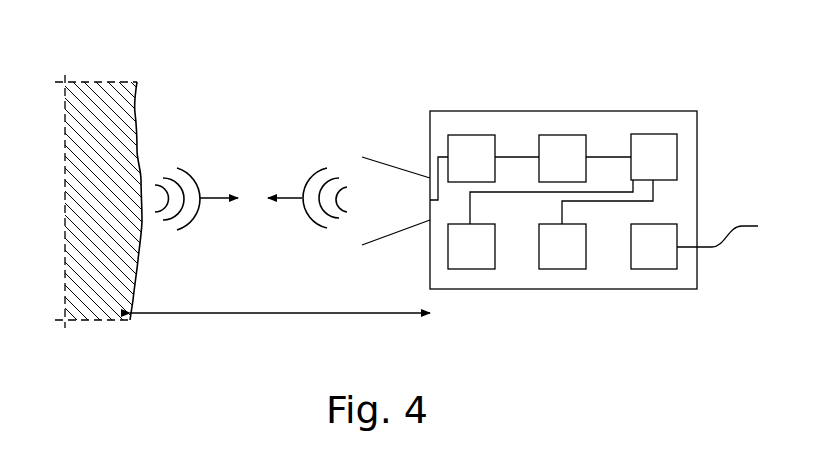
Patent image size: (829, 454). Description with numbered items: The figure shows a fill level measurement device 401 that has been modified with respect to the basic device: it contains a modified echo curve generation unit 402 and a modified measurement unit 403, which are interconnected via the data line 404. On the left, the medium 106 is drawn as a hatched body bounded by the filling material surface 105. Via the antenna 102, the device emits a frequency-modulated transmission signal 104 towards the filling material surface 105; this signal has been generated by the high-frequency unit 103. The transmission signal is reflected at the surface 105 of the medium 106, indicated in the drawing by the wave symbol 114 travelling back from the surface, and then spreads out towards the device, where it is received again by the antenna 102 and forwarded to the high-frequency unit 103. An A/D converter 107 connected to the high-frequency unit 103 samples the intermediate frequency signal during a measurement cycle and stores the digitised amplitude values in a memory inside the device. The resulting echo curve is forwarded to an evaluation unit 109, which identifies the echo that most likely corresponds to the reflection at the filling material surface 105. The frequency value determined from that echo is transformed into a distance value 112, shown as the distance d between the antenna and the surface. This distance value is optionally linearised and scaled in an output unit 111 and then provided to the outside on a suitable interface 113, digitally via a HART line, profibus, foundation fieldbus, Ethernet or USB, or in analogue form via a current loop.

The antenna 102 is at (382, 163).
The high-frequency unit 103 is at (468, 135).
The frequency-modulated transmission signal 104 is at (309, 181).
The filling material surface 105 is at (137, 82).
The medium 106 is at (66, 82).
The A/D converter 107 is at (577, 135).
The evaluation unit 109 is at (470, 269).
The output unit 111 is at (655, 269).
The distance value 112 is at (302, 313).
The interface 113 is at (723, 239).
The emitted light 114 is at (192, 218).
The fill level measurement device 401 is at (540, 111).
The echo curve generation unit 402 is at (652, 134).
The measurement unit 403 is at (562, 269).
The data line 404 is at (637, 201).